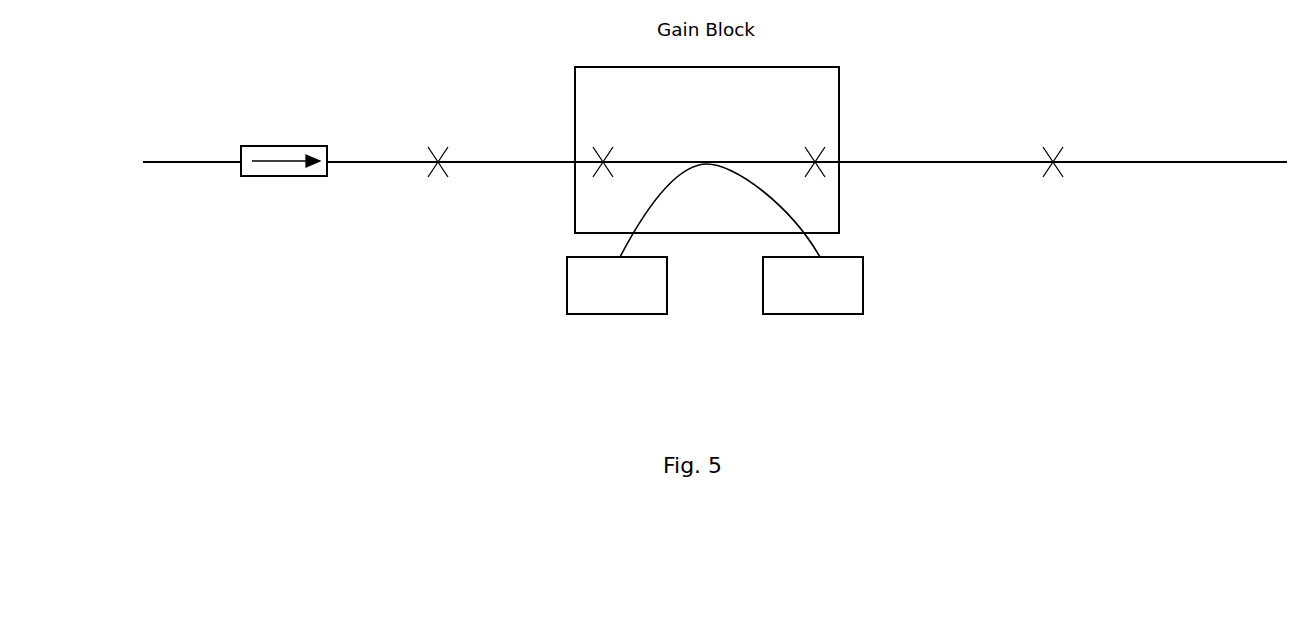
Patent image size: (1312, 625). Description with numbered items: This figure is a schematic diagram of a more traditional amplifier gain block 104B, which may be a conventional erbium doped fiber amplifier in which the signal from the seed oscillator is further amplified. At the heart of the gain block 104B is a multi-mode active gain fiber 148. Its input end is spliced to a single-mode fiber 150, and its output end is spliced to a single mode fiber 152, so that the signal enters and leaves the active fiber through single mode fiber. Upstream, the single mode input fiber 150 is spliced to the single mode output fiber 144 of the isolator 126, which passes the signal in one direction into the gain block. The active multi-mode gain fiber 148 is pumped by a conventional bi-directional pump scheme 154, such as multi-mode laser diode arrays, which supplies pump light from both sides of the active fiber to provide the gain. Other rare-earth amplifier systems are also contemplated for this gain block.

The amplifier gain block 104B is at (472, 288).
The isolator 126 is at (258, 132).
The single mode output fiber 144 is at (375, 148).
The multi-mode active gain fiber 148 is at (650, 150).
The single-mode fiber 150 is at (522, 165).
The single mode fiber 152 is at (940, 165).
The bi-directional pump scheme 154 is at (727, 235).